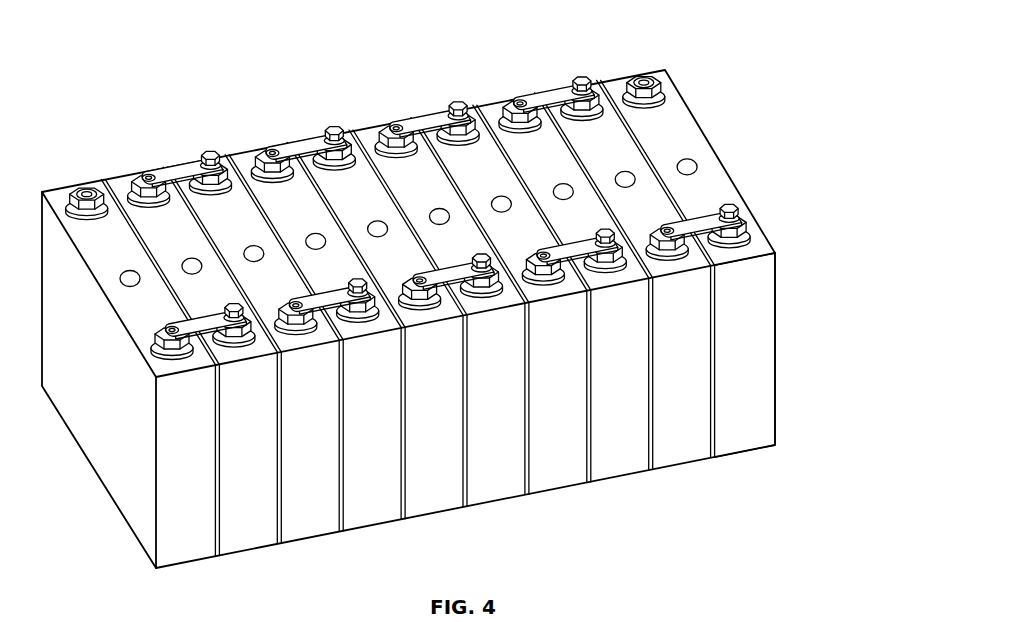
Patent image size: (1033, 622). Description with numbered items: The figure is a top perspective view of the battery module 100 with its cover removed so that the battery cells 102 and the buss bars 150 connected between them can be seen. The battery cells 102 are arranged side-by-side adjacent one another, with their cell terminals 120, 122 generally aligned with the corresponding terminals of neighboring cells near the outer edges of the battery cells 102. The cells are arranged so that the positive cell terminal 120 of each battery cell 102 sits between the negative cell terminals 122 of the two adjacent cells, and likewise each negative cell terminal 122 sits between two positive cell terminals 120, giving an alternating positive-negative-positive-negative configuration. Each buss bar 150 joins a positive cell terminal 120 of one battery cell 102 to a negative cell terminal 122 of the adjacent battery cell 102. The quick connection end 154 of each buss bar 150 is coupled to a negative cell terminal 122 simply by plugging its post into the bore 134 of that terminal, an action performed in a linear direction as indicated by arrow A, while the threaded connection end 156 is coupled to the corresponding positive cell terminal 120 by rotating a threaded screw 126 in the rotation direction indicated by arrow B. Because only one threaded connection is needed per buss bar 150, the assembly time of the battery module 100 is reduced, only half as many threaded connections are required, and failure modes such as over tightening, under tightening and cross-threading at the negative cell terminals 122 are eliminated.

The battery module 100 is at (445, 290).
The battery cell 102 is at (682, 127).
The positive cell terminal 120 is at (766, 232).
The negative cell terminal 122 is at (694, 260).
The threaded screw 126 is at (587, 77).
The bore 134 is at (648, 72).
The buss bar 150 is at (553, 97).
The quick connection end 154 is at (518, 88).
The threaded connection end 156 is at (600, 72).